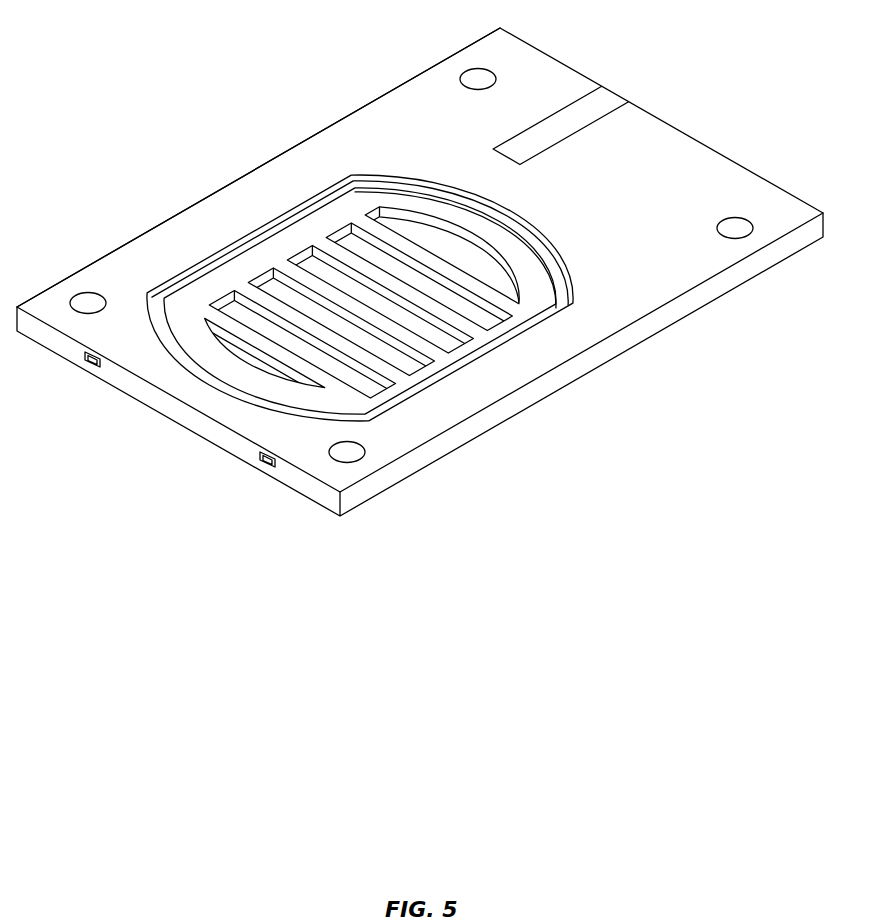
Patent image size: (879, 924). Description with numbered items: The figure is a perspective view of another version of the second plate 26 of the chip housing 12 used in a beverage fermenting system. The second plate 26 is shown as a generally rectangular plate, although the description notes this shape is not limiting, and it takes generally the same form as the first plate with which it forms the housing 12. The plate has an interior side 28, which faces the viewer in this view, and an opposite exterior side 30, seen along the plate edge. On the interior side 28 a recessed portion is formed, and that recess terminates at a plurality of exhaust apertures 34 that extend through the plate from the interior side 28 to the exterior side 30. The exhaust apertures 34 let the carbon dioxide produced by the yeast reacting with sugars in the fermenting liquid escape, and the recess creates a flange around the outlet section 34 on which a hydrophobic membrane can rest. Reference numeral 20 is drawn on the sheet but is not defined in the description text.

The chip housing 12 is at (297, 98).
The grille frame 20 is at (467, 368).
The second plate 26 is at (238, 178).
The interior side 28 is at (667, 155).
The exterior side 30 is at (613, 358).
The exhaust apertures 34 is at (270, 276).